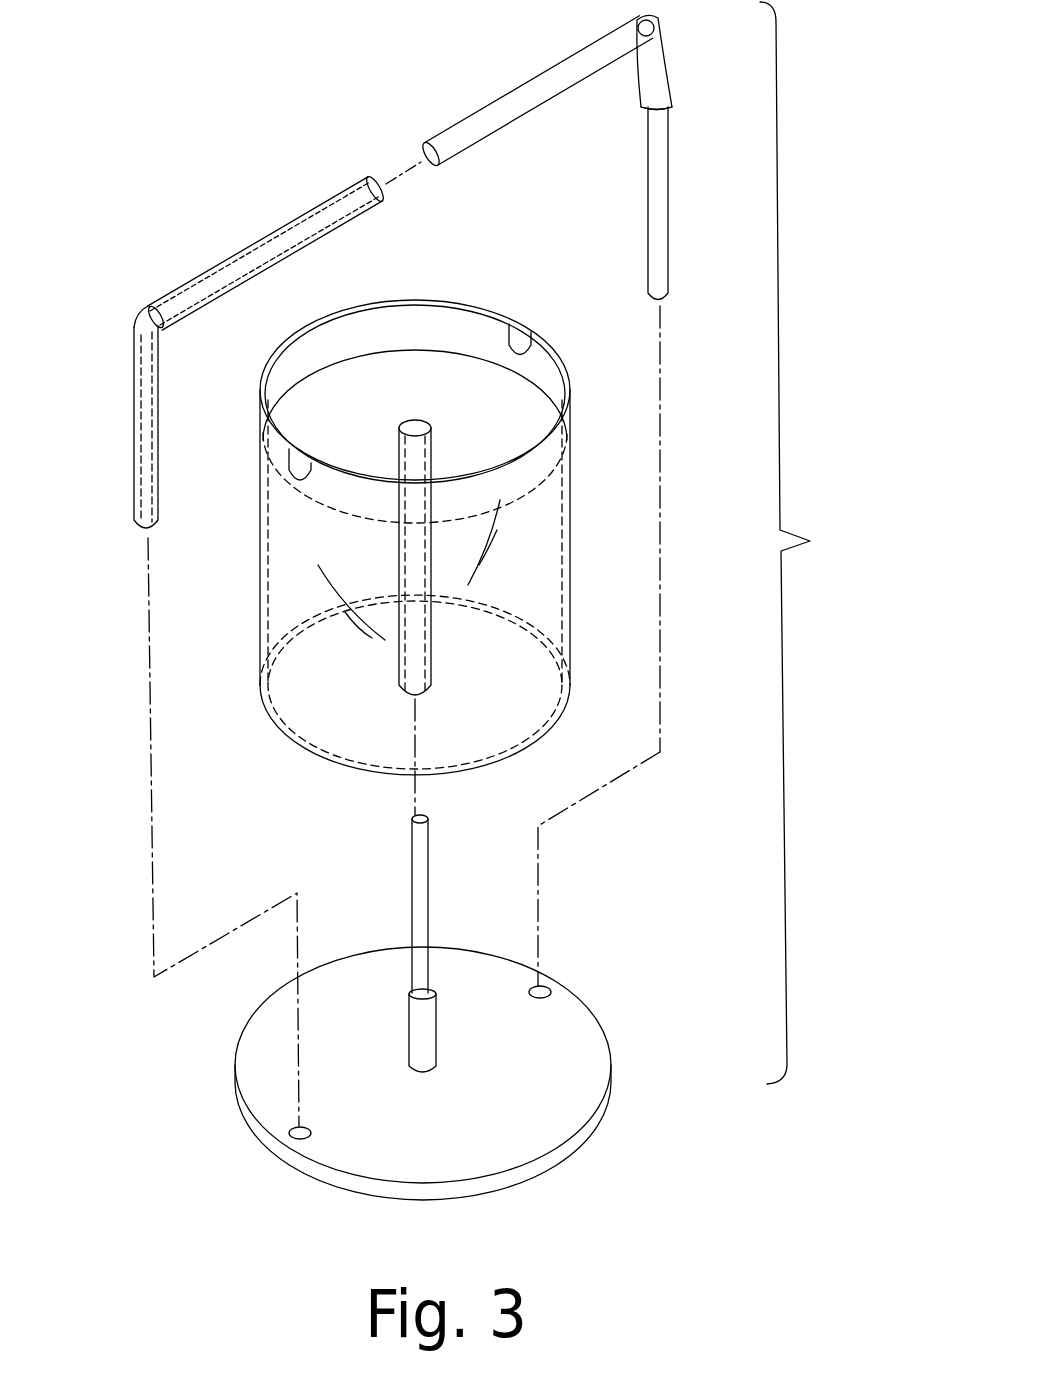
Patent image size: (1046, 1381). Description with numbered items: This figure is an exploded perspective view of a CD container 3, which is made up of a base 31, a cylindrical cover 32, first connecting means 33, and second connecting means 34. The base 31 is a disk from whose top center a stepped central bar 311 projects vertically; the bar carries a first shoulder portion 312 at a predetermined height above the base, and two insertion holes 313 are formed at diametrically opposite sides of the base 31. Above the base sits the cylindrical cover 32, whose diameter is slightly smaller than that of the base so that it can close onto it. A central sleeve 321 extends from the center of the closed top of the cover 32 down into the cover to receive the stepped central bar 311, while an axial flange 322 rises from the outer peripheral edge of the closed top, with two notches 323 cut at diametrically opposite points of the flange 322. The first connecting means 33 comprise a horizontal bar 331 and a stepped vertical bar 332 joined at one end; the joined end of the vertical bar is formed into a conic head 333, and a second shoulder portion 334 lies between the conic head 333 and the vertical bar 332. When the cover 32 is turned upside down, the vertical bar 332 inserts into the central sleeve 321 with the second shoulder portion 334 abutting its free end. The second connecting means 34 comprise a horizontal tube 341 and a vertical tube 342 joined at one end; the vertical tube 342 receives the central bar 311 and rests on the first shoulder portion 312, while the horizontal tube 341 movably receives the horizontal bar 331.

The CD container 3 is at (448, 600).
The base 31 is at (597, 1037).
The stepped central bar 311 is at (408, 1017).
The first shoulder portion 312 is at (436, 998).
The insertion holes 313 is at (548, 984).
The cylindrical cover 32 is at (571, 580).
The central sleeve 321 is at (433, 638).
The axial flange 322 is at (563, 425).
The notches 323 is at (516, 340).
The first connecting means 33 is at (676, 50).
The horizontal bar 331 is at (512, 90).
The vertical bar 332 is at (669, 186).
The conic head 333 is at (669, 72).
The second shoulder portion 334 is at (648, 112).
The second connecting means 34 is at (198, 262).
The horizontal tube 341 is at (278, 227).
The vertical tube 342 is at (134, 417).